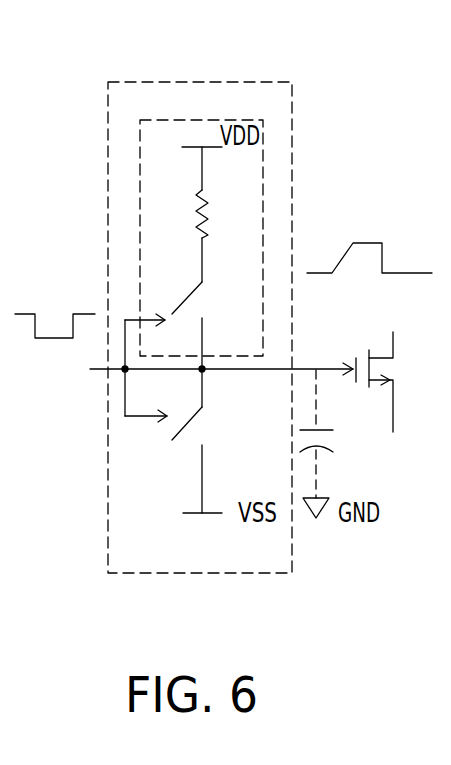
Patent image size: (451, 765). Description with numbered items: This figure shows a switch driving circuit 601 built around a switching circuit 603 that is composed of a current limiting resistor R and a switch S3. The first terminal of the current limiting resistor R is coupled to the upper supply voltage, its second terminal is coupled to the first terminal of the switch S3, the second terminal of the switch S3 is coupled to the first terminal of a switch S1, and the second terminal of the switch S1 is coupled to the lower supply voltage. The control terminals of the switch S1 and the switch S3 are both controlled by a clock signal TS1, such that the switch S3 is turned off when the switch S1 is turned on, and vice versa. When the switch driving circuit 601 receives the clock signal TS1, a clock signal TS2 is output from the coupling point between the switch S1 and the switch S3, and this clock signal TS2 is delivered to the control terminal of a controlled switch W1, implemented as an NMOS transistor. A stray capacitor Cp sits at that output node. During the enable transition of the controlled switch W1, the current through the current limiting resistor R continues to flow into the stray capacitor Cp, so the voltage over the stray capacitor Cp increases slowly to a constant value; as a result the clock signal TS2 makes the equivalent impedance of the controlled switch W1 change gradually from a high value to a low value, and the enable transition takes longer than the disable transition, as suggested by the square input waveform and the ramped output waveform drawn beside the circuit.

The switch driving circuit 601 is at (291, 103).
The switching circuit 603 is at (168, 119).
The current limiting resistor R is at (214, 214).
The switch S3 is at (180, 324).
The switch S1 is at (179, 441).
The clock signal TS1 is at (108, 365).
The clock signal TS2 is at (300, 369).
The controlled switch W1 is at (394, 382).
The stray capacitor Cp is at (335, 434).